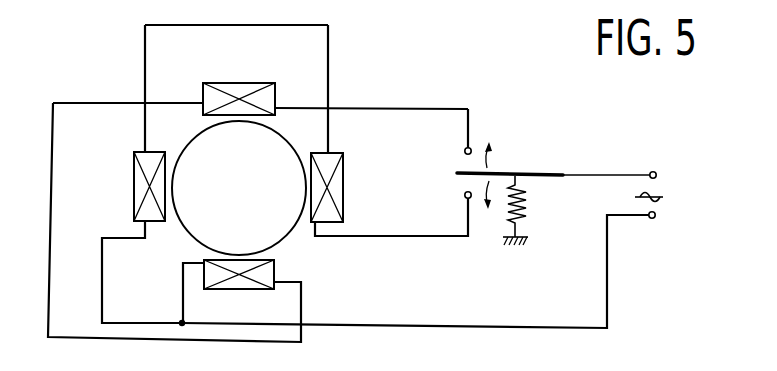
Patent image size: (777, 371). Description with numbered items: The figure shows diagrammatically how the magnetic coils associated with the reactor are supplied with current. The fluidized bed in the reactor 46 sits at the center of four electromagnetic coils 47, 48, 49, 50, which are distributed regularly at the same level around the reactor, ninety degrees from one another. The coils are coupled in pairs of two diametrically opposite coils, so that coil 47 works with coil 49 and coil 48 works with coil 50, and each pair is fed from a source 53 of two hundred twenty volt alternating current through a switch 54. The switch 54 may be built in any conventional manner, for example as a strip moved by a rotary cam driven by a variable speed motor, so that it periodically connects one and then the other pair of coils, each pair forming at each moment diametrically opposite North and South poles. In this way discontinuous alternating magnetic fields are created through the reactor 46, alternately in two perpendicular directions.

The reactor 46 is at (196, 135).
The electromagnetic coil 47 is at (152, 224).
The electromagnetic coil 48 is at (258, 275).
The electromagnetic coil 49 is at (335, 189).
The electromagnetic coil 50 is at (240, 90).
The AC power source 53 is at (669, 206).
The switch blade 54 is at (541, 153).